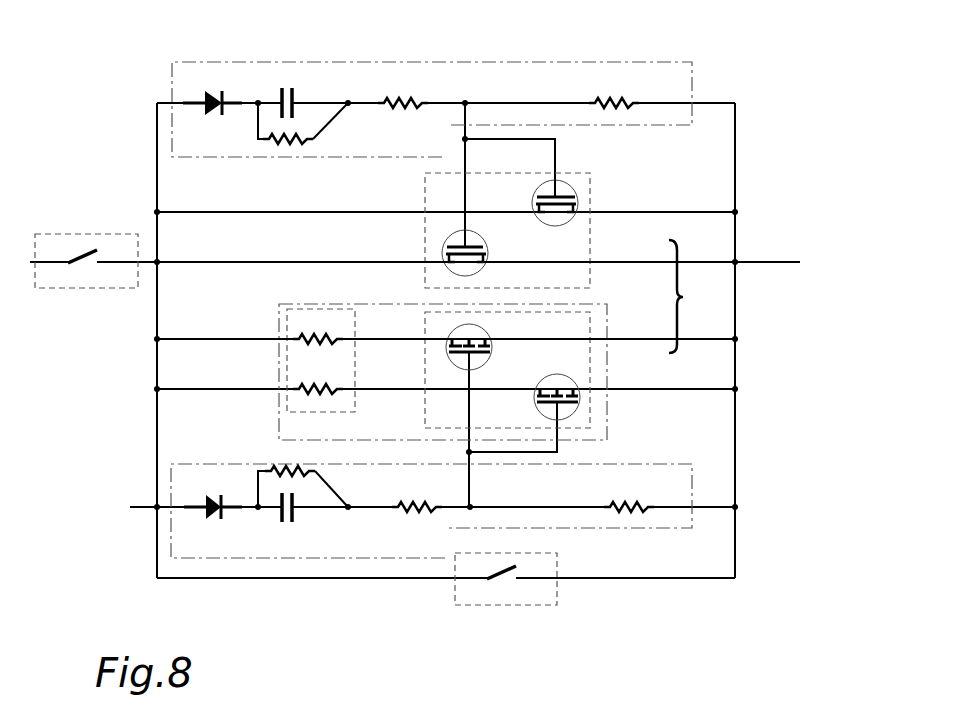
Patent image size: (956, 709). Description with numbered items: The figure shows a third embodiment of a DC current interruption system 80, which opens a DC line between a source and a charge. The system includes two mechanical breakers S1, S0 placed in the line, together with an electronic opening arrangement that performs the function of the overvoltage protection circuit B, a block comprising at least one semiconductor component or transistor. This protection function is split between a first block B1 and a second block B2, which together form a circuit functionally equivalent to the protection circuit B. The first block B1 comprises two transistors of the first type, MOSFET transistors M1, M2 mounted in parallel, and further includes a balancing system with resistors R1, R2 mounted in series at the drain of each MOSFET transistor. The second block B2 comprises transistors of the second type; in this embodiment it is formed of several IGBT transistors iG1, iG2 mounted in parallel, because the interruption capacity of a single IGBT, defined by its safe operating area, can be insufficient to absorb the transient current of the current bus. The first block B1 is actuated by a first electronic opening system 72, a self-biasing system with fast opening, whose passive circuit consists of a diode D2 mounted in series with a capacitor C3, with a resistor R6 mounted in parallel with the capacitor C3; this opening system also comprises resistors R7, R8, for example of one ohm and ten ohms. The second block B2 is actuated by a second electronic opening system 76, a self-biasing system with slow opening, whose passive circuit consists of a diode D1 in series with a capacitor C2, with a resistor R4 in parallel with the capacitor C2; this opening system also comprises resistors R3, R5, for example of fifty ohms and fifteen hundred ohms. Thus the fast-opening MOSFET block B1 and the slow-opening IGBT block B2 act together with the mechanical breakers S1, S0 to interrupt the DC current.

The interruption system 80 is at (766, 109).
The second electronic opening system 76 is at (573, 62).
The first electronic opening system 72 is at (692, 475).
The diode D1 is at (209, 111).
The capacitor C2 is at (275, 97).
The resistor R4 is at (303, 123).
The resistor R3 is at (408, 93).
The resistor R5 is at (614, 93).
The IGBT transistor iG1 is at (553, 227).
The IGBT transistor iG2 is at (488, 252).
The MOSFET transistor M1 is at (491, 357).
The MOSFET transistor M2 is at (540, 407).
The resistor R1 is at (320, 329).
The resistor R2 is at (320, 379).
The second block B2 is at (590, 230).
The first block B1 is at (607, 368).
The overvoltage protection circuit B is at (682, 296).
The mechanical breaker S1 is at (55, 288).
The mechanical breaker S0 is at (515, 605).
The diode D2 is at (212, 498).
The capacitor C3 is at (274, 513).
The resistor R6 is at (303, 486).
The resistor R7 is at (417, 494).
The resistor R8 is at (629, 494).